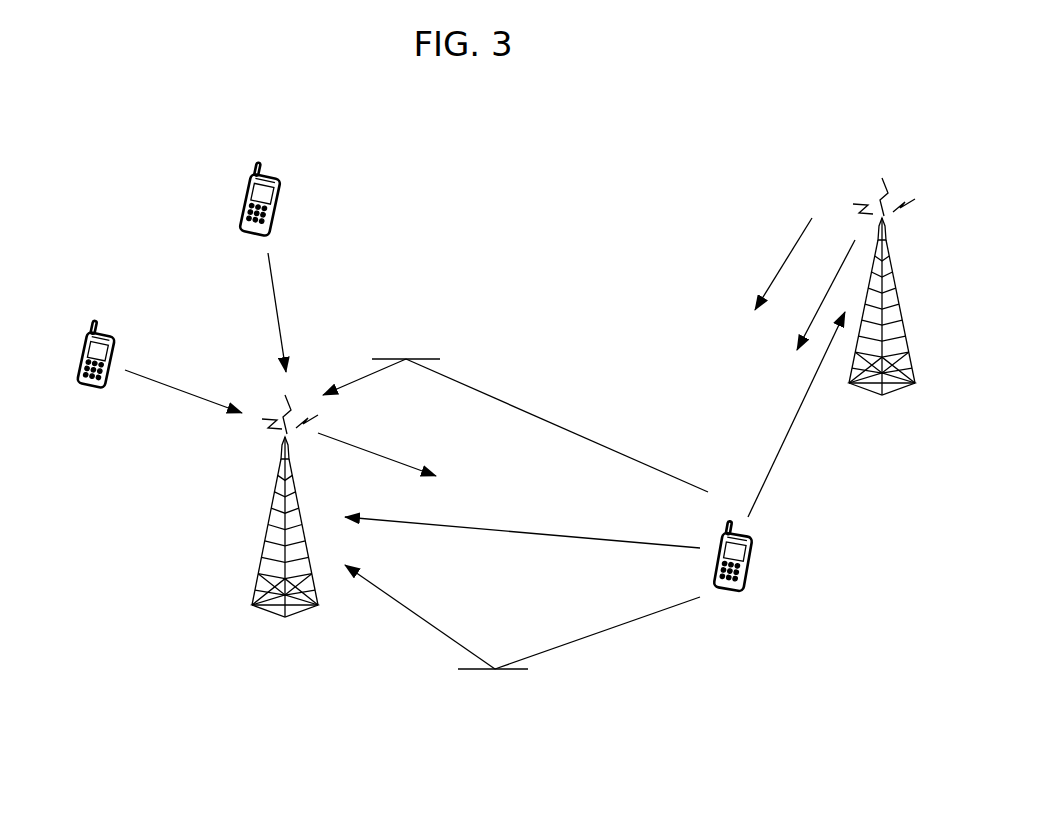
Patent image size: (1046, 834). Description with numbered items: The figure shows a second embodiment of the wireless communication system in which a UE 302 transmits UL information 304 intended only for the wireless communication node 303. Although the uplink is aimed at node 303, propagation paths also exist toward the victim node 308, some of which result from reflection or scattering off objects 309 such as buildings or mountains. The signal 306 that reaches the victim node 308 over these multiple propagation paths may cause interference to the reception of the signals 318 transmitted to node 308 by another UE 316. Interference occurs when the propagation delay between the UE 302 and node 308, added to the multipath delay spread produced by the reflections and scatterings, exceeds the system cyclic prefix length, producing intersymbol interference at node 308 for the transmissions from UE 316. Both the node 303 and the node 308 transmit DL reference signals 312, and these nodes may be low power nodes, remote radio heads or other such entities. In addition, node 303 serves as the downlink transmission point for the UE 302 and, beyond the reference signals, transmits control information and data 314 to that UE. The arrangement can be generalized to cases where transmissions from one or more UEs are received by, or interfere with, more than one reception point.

The UE 302 is at (741, 581).
The wireless communication node 303 is at (889, 313).
The UL information 304 is at (790, 432).
The signal received through multiple propagation paths 306 is at (678, 478).
The victim node 308 is at (270, 509).
The objects 309 is at (430, 356).
The DL reference signals 312 is at (352, 444).
The control information and data 314 is at (805, 233).
The UE 316 is at (225, 208).
The signals 318 is at (272, 280).